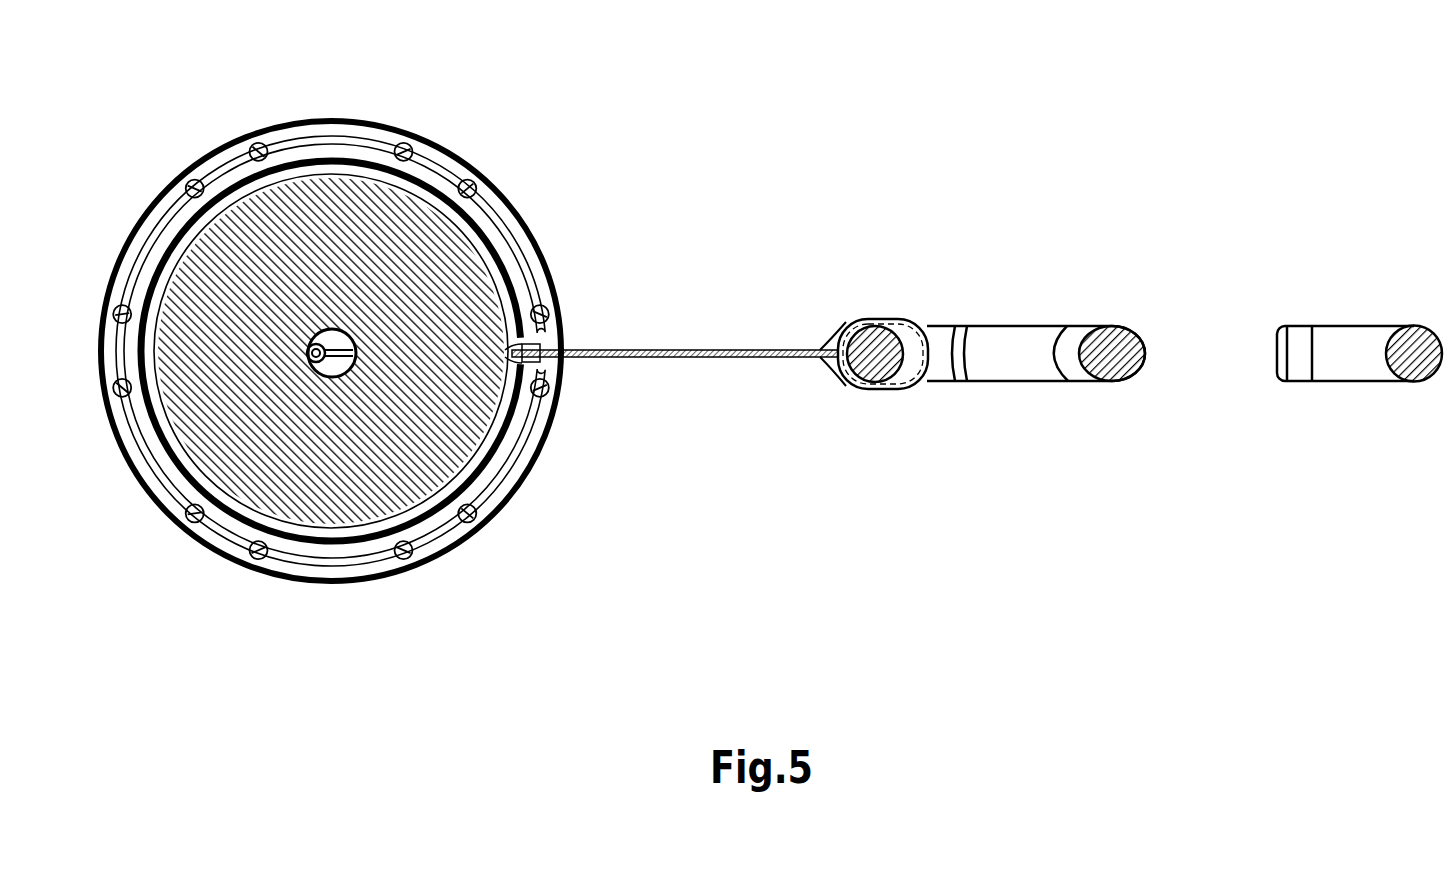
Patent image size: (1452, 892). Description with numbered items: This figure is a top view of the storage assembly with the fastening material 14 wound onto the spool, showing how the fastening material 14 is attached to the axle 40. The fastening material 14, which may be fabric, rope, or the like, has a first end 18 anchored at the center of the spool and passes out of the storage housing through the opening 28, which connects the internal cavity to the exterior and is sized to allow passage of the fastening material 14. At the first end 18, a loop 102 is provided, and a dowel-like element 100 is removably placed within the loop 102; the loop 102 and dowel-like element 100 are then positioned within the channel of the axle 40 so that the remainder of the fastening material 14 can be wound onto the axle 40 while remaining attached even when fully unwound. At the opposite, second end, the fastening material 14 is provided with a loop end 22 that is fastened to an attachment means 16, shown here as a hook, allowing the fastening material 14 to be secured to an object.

The fastening material 14 is at (348, 205).
The attachment means 16 is at (1106, 288).
The first end 18 is at (297, 360).
The loop end 22 is at (928, 330).
The opening 28 is at (576, 347).
The axle 40 is at (318, 398).
The dowel-like element 100 is at (308, 345).
The loop 102 is at (303, 365).